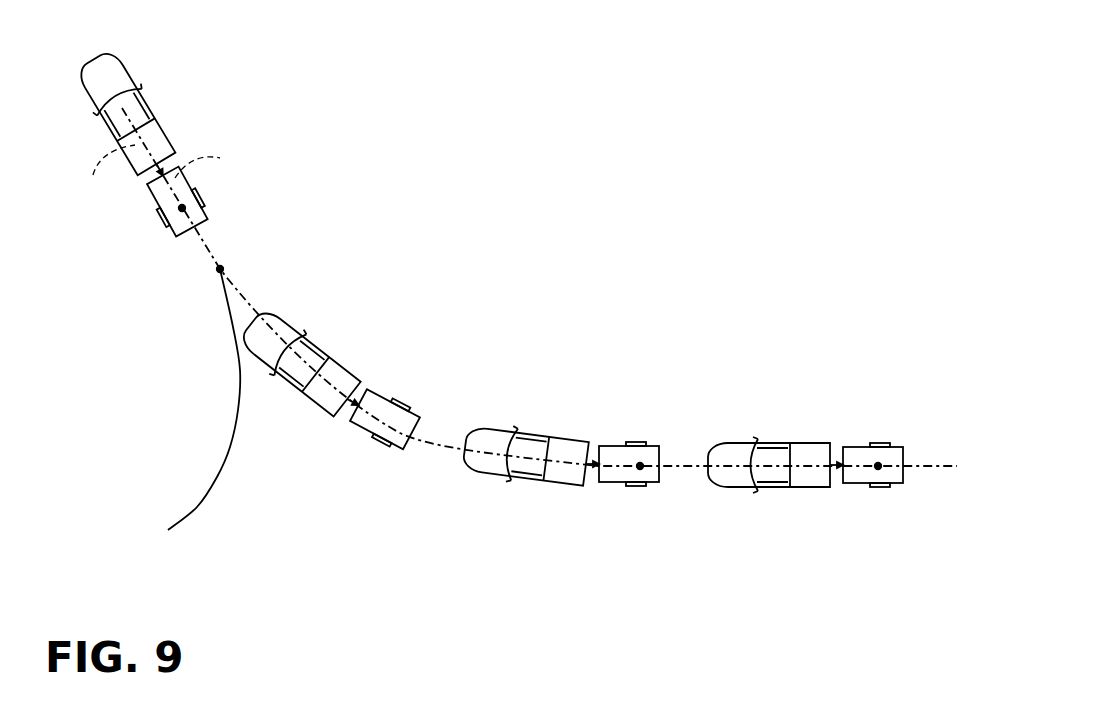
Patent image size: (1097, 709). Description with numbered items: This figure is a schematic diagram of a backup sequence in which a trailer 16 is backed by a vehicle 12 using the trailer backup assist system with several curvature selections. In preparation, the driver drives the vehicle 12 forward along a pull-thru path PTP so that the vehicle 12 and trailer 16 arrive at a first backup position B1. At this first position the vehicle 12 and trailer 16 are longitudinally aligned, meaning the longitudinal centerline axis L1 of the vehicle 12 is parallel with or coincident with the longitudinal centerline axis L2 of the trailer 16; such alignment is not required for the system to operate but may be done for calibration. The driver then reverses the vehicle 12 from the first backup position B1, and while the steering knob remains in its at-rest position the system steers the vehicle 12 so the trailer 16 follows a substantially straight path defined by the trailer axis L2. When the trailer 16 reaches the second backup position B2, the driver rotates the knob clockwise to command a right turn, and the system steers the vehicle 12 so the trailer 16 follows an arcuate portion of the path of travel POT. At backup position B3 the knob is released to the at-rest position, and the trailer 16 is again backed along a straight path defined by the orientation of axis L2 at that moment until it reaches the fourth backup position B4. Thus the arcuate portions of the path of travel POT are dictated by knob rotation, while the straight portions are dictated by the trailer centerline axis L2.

The vehicle 12 is at (121, 56).
The trailer 16 is at (155, 197).
The longitudinal centerline axis of the vehicle L1 is at (105, 174).
The longitudinal centerline axis of the trailer L2 is at (216, 160).
The first backup position B1 is at (178, 214).
The second backup position B2 is at (217, 272).
The backup position B3 is at (638, 470).
The fourth backup position B4 is at (876, 470).
The path of travel POT is at (689, 463).
The pull-thru path PTP is at (203, 490).